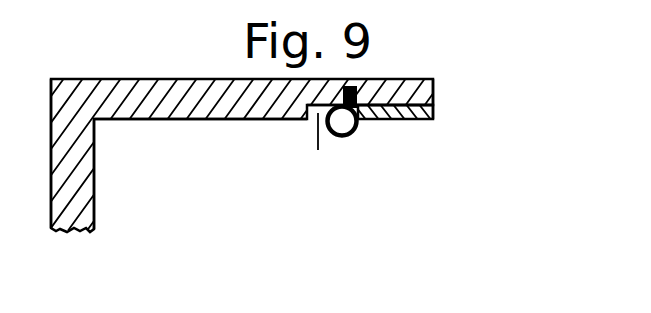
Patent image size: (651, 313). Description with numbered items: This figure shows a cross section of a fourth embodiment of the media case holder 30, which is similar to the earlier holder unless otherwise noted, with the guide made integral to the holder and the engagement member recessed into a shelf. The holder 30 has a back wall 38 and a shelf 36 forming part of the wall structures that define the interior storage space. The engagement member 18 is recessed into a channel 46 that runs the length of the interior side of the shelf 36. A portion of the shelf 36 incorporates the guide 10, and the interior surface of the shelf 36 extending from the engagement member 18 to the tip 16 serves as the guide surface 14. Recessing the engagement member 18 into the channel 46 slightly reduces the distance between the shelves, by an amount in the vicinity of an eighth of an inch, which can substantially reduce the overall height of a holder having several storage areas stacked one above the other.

The holder 30 is at (180, 79).
The shelf 36 is at (138, 103).
The back wall 38 is at (73, 185).
The guide surface 14 is at (385, 122).
The guide 10 is at (402, 121).
The tip 16 is at (436, 120).
The engagement member 18 is at (337, 137).
The channel 46 is at (318, 150).